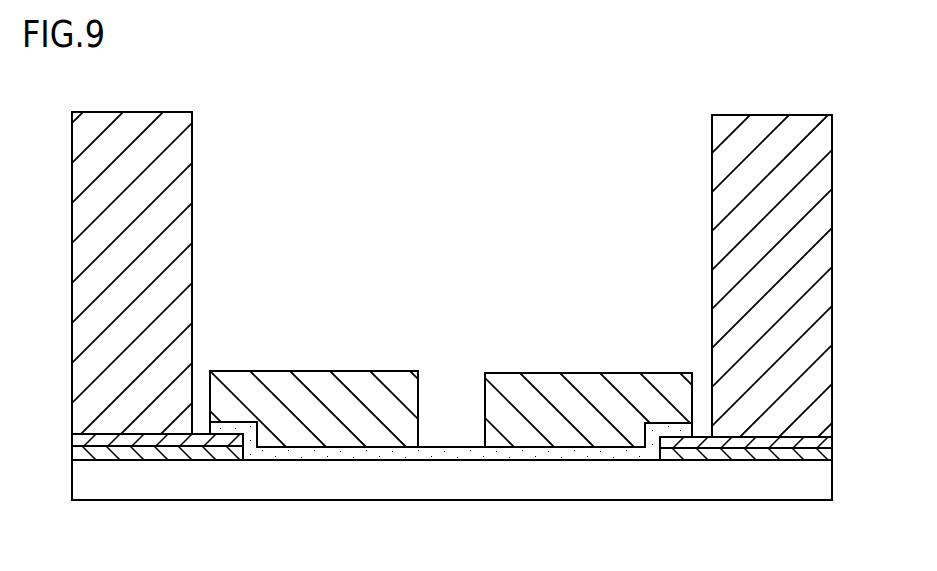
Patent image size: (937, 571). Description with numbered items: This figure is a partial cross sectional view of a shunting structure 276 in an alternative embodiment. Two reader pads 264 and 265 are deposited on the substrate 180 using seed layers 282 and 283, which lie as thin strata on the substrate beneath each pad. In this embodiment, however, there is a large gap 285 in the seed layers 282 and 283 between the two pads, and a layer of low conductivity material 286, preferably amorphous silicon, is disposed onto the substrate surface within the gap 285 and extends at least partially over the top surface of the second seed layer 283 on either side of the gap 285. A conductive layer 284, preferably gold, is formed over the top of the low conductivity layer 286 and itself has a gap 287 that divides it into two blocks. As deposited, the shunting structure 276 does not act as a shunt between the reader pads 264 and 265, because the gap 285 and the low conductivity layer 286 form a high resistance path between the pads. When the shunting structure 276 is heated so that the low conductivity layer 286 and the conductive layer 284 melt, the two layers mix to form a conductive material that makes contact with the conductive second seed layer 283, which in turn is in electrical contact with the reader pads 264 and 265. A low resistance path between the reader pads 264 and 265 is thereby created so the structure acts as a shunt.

The substrate 180 is at (828, 470).
The reader pad 264 is at (173, 130).
The reader pad 265 is at (723, 127).
The seed layer 282 is at (828, 453).
The second seed layer 283 is at (828, 440).
The conductive layer 284 is at (587, 380).
The gap 285 is at (335, 450).
The layer of low conductivity material 286 is at (317, 455).
The gap 287 is at (460, 382).
The shunting structure 276 is at (455, 318).